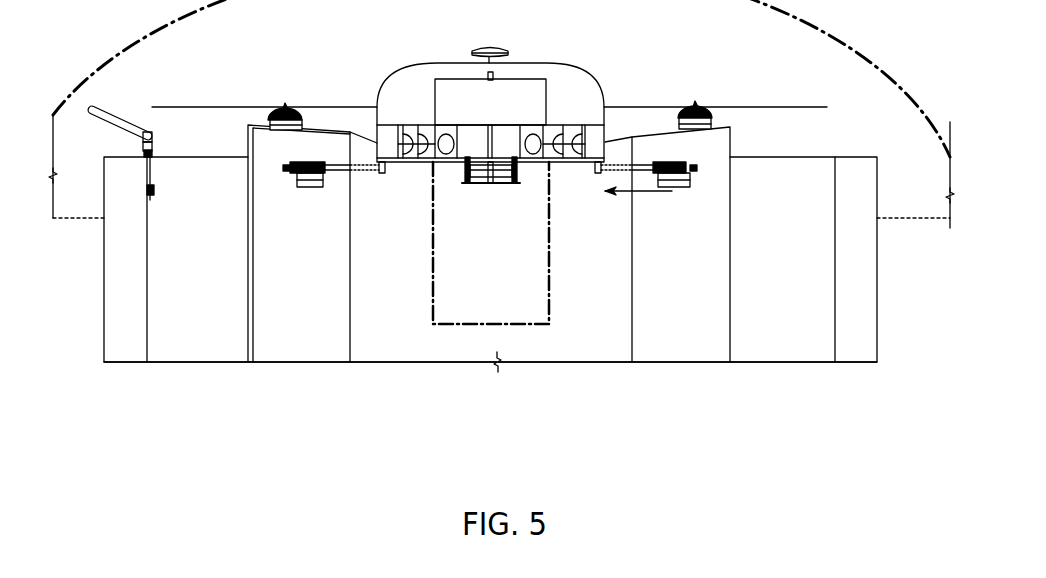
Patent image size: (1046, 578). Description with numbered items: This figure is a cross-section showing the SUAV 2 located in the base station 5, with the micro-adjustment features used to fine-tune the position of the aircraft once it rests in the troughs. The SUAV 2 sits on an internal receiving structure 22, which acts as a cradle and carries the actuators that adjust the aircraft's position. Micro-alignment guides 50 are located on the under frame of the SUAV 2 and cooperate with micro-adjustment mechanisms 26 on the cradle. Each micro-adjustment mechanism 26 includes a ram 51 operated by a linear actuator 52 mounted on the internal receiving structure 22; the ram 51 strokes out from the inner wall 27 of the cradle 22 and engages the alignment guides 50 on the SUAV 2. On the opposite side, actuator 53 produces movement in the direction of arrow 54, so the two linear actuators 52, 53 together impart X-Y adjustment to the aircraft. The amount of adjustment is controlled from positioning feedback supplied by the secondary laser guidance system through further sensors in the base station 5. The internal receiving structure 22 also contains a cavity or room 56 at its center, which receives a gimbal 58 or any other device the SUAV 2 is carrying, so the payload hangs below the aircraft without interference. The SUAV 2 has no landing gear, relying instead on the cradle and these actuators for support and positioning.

The SUAV 2 is at (565, 68).
The base station 5 is at (842, 157).
The internal receiving structure 22 is at (732, 143).
The micro-adjustment mechanism 26 is at (382, 243).
The inner wall 27 is at (350, 335).
The micro-alignment guide 50 is at (383, 168).
The ram 51 is at (367, 172).
The linear actuator 52 is at (303, 188).
The actuator 53 is at (680, 187).
The arrow 54 is at (617, 193).
The cavity or room 56 is at (540, 362).
The gimbal 58 is at (480, 325).